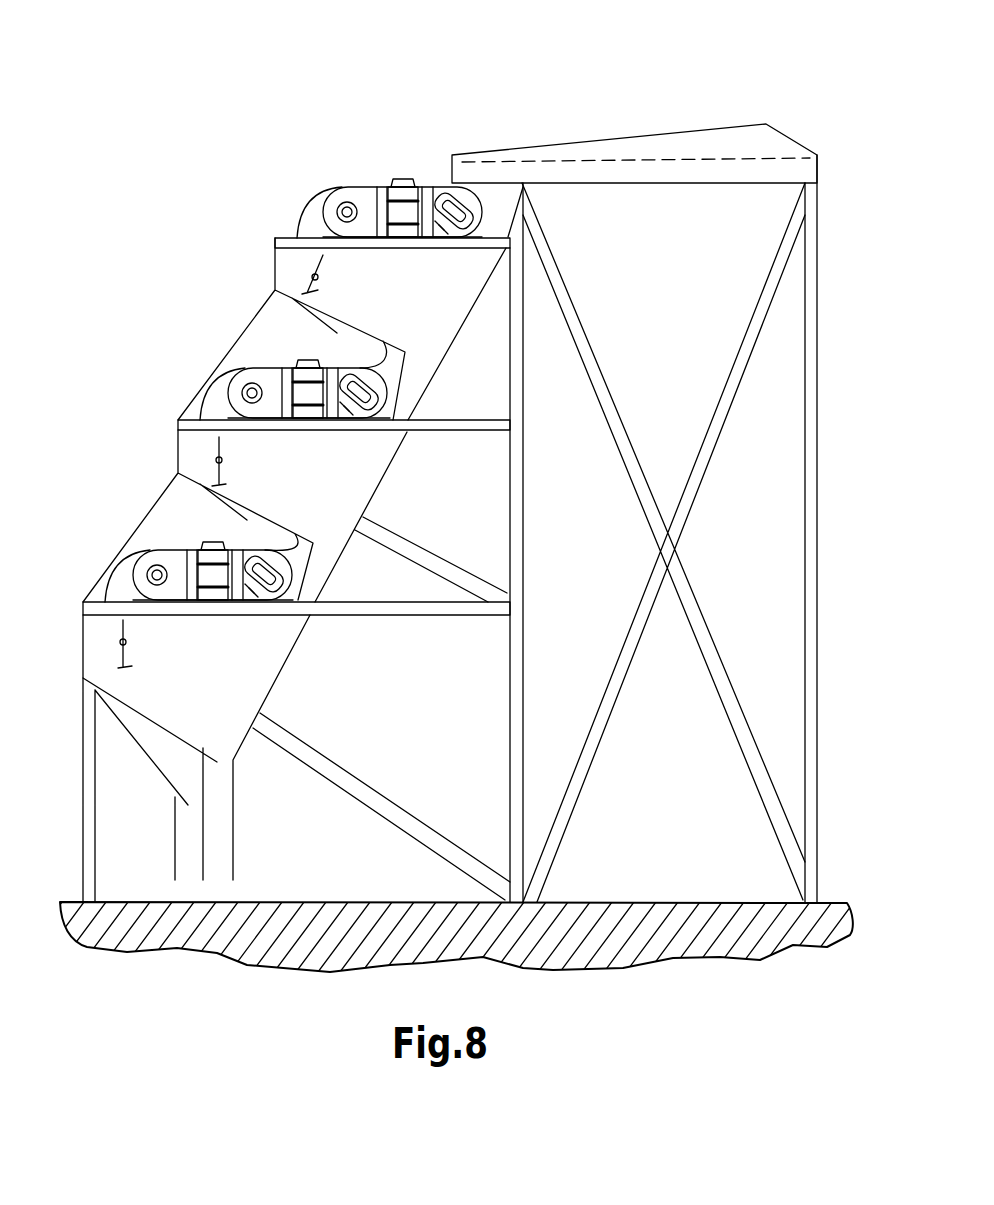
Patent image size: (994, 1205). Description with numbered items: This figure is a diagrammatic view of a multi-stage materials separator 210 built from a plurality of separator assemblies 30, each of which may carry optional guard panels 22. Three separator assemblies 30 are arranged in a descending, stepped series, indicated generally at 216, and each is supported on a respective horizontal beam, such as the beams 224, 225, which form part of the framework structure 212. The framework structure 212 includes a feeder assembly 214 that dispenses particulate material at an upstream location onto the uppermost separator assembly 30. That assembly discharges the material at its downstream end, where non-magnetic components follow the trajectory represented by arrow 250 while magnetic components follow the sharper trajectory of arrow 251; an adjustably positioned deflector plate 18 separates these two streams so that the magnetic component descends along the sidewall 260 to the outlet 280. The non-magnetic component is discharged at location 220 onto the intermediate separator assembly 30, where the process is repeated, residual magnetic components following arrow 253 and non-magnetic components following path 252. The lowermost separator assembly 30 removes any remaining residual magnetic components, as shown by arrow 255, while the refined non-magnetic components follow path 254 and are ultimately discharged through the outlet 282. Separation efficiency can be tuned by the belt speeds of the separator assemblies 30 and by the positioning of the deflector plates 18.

The deflector plate 18 is at (312, 288).
The guard panel 22 is at (360, 608).
The separator assembly 30 is at (373, 147).
The storage rack 210 is at (250, 95).
The framework structure 212 is at (752, 432).
The feeder assembly 214 is at (637, 103).
The tiered structure 216 is at (230, 263).
The discharge location 220 is at (373, 350).
The horizontal beam 224 is at (453, 252).
The horizontal beam 225 is at (423, 428).
The non-magnetic trajectory arrow 250 is at (293, 267).
The magnetic trajectory arrow 251 is at (337, 262).
The non-magnetic path arrow 252 is at (198, 450).
The residual magnetic path arrow 253 is at (240, 447).
The refined non-magnetic path arrow 254 is at (103, 632).
The residual magnetic path arrow 255 is at (142, 632).
The sidewall 260 is at (373, 495).
The outlet 280 is at (226, 858).
The outlet 282 is at (176, 858).